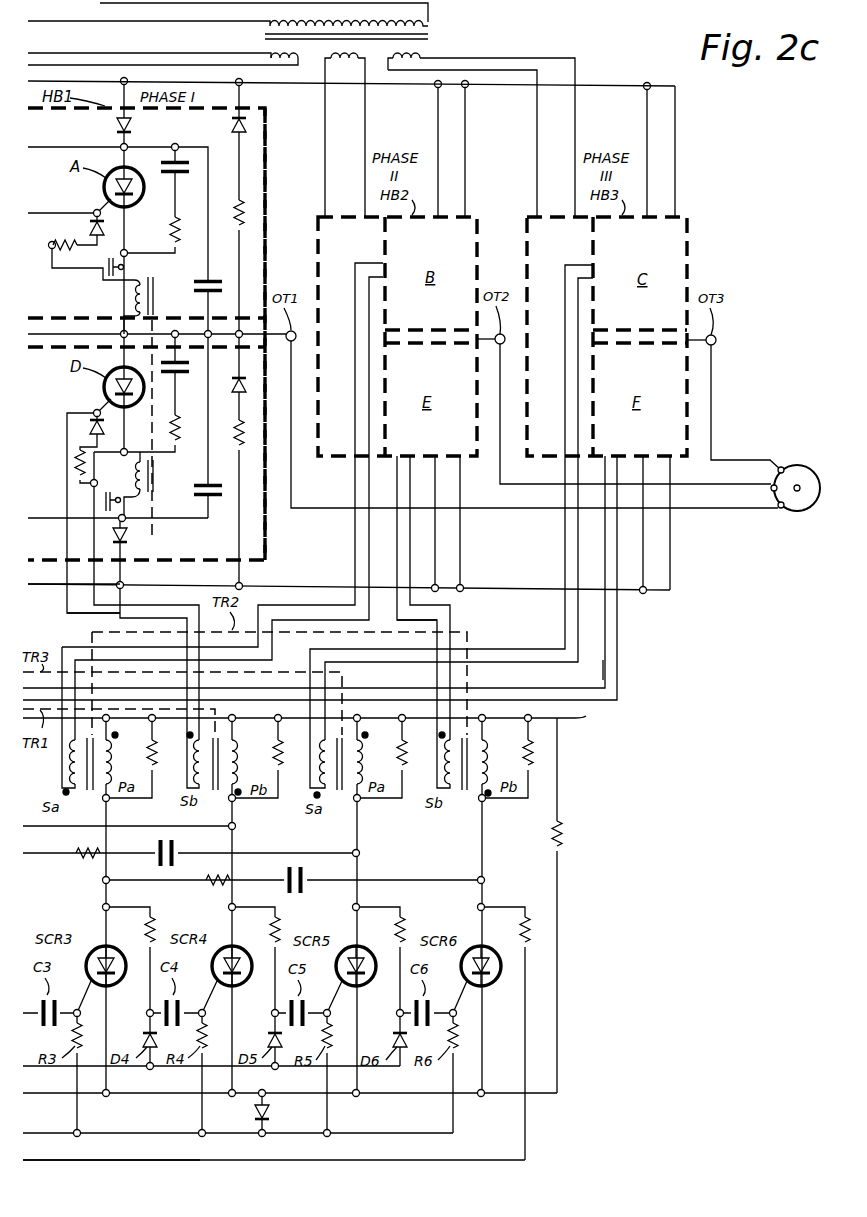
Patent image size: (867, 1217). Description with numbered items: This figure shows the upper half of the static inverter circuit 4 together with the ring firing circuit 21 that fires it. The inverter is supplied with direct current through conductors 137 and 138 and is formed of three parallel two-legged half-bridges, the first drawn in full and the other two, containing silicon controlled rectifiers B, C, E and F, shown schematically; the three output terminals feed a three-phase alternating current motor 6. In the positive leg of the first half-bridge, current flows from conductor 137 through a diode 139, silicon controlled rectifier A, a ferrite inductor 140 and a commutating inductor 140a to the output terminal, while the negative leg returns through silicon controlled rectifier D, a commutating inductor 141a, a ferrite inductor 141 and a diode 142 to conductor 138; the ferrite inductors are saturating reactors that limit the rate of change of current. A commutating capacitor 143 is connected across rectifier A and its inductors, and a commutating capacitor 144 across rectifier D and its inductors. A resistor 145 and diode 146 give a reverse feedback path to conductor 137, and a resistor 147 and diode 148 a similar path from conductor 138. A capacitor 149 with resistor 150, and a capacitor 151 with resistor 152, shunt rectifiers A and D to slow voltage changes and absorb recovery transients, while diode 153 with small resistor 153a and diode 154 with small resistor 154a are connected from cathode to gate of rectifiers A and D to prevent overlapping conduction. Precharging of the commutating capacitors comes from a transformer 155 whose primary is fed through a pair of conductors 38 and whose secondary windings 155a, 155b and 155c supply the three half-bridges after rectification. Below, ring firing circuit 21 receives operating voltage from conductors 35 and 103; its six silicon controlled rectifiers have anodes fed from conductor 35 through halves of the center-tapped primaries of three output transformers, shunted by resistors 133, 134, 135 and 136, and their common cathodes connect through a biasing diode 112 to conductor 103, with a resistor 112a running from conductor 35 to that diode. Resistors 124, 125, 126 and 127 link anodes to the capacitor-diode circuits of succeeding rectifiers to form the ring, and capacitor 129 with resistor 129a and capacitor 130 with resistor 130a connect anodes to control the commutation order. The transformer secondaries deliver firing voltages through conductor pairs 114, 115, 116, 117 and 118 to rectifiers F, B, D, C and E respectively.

The pair of conductors 38 is at (100, 4).
The transformer 155 is at (430, 37).
The secondary winding 155a is at (266, 54).
The secondary winding 155b is at (325, 63).
The secondary winding 155c is at (428, 54).
The conductor 137 is at (610, 84).
The static inverter circuit 4 is at (282, 334).
The diode 139 is at (117, 127).
The diode 146 is at (232, 126).
The capacitor 149 is at (165, 166).
The resistor 145 is at (239, 210).
The diode 153 is at (93, 211).
The resistor 153a is at (90, 231).
The resistor 150 is at (173, 226).
The ferrite inductor 140 is at (106, 272).
The commutating inductor 140a is at (133, 299).
The commutating capacitor 143 is at (200, 286).
The capacitor 151 is at (181, 373).
The diode 148 is at (233, 386).
The resistor 152 is at (177, 448).
The resistor 147 is at (238, 446).
The diode 154 is at (92, 411).
The resistor 154a is at (78, 456).
The commutating inductor 141a is at (140, 490).
The ferrite inductor 141 is at (122, 503).
The commutating capacitor 144 is at (213, 497).
The diode 142 is at (128, 537).
The three-phase alternating current motor 6 is at (787, 466).
The conductor 138 is at (52, 586).
The pair of conductors 116 is at (120, 613).
The pair of conductors 115 is at (88, 651).
The pair of conductors 118 is at (440, 628).
The pair of conductors 117 is at (505, 661).
The pair of conductors 114 is at (605, 666).
The conductor 35 is at (572, 718).
The resistor 133 is at (152, 741).
The resistor 134 is at (277, 742).
The resistor 135 is at (402, 741).
The resistor 136 is at (528, 740).
The resistor 112a is at (565, 836).
The current limiting resistor 129a is at (85, 853).
The capacitor 129 is at (158, 851).
The capacitor 130 is at (300, 880).
The resistor 130a is at (210, 881).
The ring firing circuit 21 is at (53, 895).
The resistor 124 is at (156, 930).
The resistor 125 is at (281, 930).
The resistor 126 is at (406, 930).
The resistor 127 is at (528, 928).
The conductor 103 is at (153, 1132).
The biasing diode 112 is at (270, 1112).